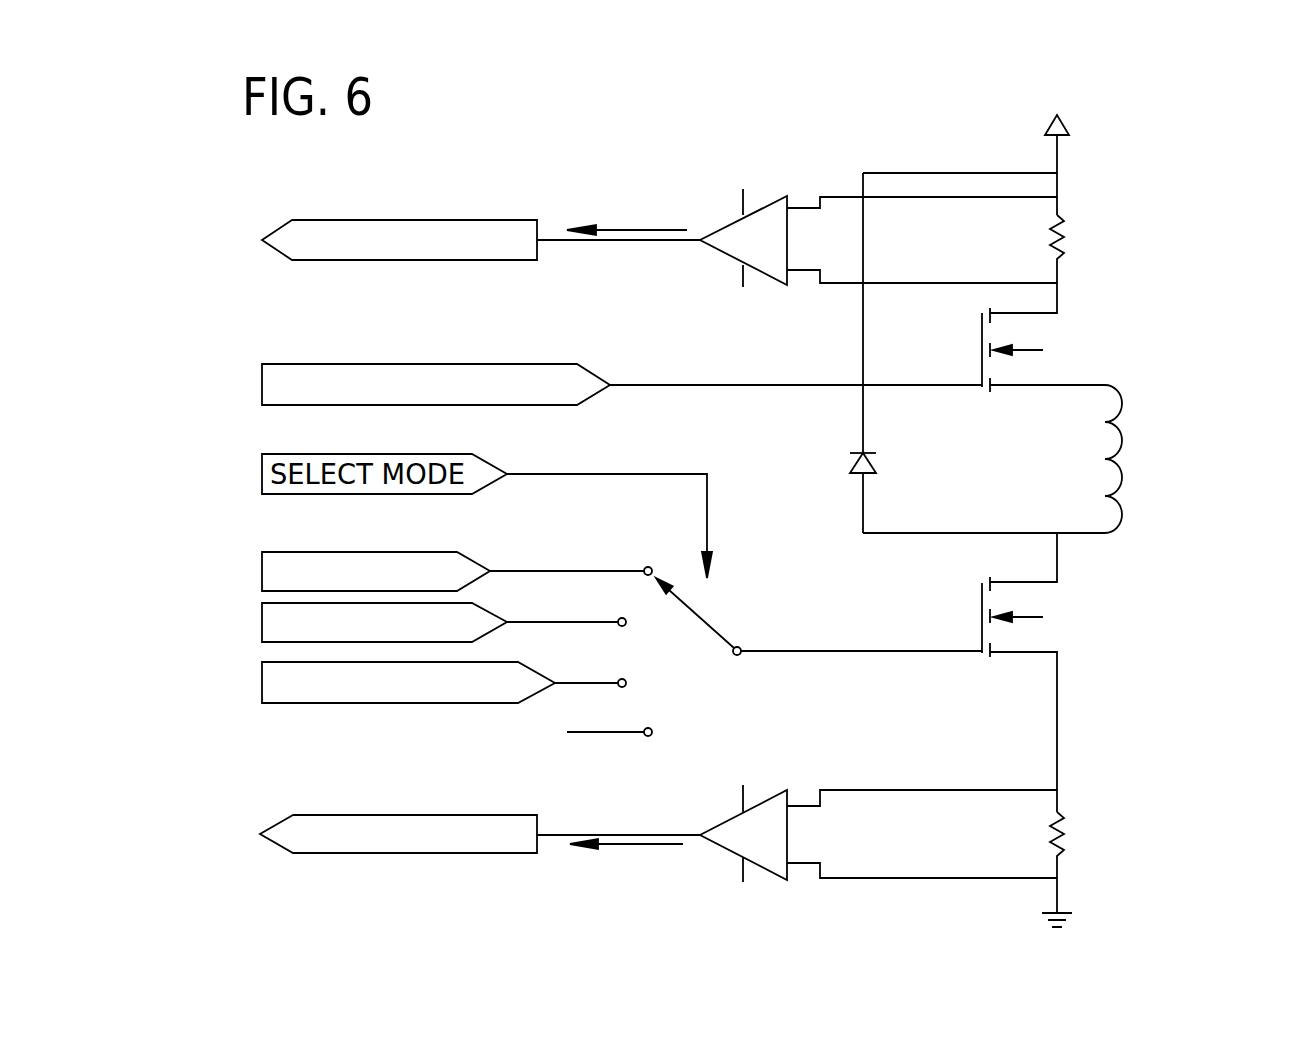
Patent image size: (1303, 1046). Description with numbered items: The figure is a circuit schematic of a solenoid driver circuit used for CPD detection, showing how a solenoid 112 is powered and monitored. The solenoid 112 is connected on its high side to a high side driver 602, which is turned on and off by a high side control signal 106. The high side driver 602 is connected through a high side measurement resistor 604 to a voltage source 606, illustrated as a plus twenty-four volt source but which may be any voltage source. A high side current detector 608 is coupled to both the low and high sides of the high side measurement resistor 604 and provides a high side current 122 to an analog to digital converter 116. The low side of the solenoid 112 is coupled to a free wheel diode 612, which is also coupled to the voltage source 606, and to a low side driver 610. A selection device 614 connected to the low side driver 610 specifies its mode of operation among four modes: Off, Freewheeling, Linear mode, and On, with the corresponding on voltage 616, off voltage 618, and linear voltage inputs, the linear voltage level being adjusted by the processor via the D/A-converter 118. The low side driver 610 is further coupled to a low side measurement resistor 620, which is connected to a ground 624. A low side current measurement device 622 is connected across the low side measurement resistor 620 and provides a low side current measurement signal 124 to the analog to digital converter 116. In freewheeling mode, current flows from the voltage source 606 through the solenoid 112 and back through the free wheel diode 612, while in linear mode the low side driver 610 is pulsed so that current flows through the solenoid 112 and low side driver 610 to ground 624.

The high side control signal 106 is at (262, 380).
The solenoid 112 is at (1108, 462).
The analog to digital converter 116 is at (262, 238).
The D/A-converter 118 is at (262, 685).
The high side current 122 is at (635, 227).
The low side current measurement signal 124 is at (637, 847).
The high side driver 602 is at (982, 352).
The high side measurement resistor 604 is at (1062, 233).
The voltage source 606 is at (1068, 122).
The high side current detector 608 is at (768, 198).
The low side driver 610 is at (982, 618).
The free wheel diode 612 is at (872, 460).
The selection device 614 is at (703, 618).
The on voltage input 616 is at (262, 570).
The off voltage input 618 is at (262, 622).
The low side measurement resistor 620 is at (1060, 823).
The low side current measurement device 622 is at (770, 798).
The ground 624 is at (1070, 908).